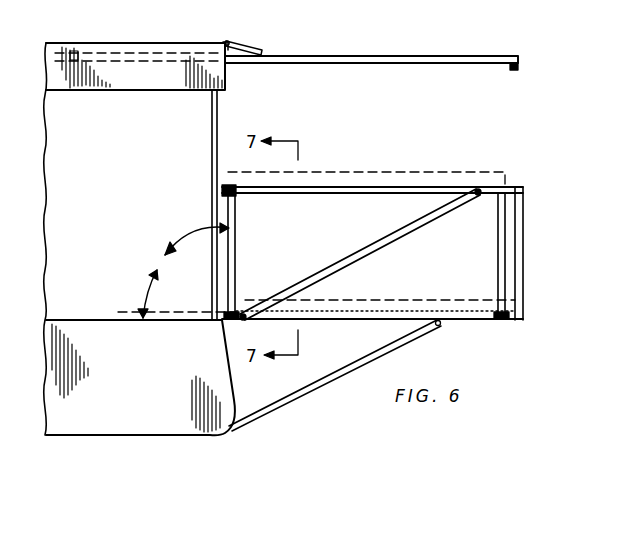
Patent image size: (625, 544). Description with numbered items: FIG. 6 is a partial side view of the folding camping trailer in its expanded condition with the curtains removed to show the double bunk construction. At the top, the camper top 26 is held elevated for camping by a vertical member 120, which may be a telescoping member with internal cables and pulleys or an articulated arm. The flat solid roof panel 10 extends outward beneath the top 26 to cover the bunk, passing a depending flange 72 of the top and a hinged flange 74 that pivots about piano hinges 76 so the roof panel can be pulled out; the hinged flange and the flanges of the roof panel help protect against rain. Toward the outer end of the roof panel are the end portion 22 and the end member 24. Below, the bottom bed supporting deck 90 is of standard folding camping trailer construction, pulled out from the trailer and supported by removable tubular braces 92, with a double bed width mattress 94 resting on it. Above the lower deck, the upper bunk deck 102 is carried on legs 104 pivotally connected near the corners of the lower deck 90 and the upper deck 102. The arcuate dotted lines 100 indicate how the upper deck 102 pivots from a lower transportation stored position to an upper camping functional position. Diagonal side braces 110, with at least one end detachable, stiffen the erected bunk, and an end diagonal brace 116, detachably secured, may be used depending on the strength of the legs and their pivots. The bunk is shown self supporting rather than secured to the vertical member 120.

The roof panel 10 is at (440, 63).
The beam end 22 is at (497, 57).
The end tab 24 is at (516, 70).
The camper top 26 is at (92, 43).
The depending flange 72 is at (195, 46).
The hinged flange 74 is at (262, 52).
The piano hinges 76 is at (229, 42).
The bottom bed supporting deck 90 is at (358, 320).
The tubular braces 92 is at (352, 372).
The mattresses 94 is at (423, 300).
The arcuate dotted lines 100 is at (186, 236).
The upper bunk deck 102 is at (312, 190).
The legs 104 is at (262, 262).
The diagonal side braces 110 is at (344, 264).
The end diagonal brace 116 is at (520, 266).
The vertical member 120 is at (217, 148).